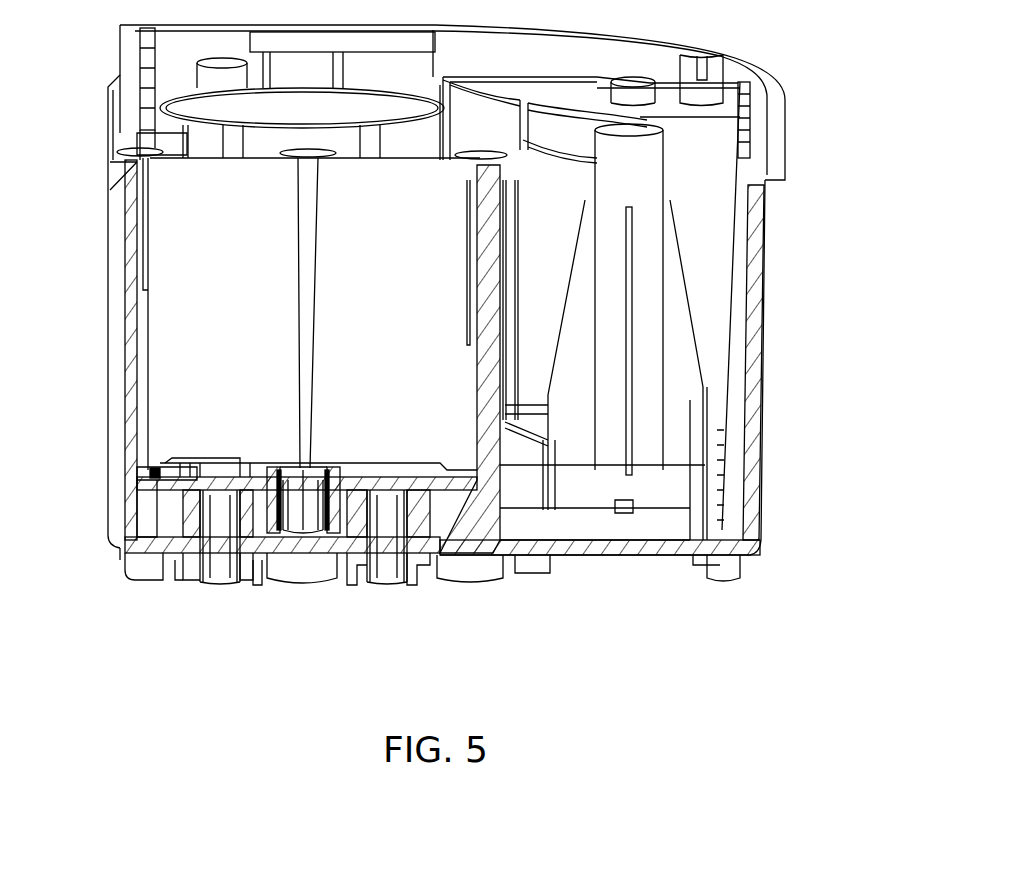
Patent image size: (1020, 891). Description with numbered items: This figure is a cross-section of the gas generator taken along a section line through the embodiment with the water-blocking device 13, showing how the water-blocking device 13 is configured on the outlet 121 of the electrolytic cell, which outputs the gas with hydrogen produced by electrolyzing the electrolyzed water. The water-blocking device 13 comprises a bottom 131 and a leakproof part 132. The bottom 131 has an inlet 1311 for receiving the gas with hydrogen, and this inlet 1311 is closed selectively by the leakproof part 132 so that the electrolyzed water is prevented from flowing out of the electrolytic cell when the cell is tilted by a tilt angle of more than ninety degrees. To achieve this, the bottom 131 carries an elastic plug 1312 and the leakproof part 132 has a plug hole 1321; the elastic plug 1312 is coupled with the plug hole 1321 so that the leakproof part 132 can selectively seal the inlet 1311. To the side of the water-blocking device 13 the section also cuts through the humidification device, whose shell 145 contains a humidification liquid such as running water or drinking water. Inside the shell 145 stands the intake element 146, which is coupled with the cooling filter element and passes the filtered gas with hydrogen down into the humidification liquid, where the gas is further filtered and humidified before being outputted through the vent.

The water-blocking device 13 is at (258, 408).
The plug hole 1321 is at (200, 455).
The leakproof part 132 is at (137, 477).
The bottom 131 is at (140, 548).
The inlet 1311 is at (187, 540).
The elastic plug 1312 is at (337, 497).
The outlet 121 is at (390, 585).
The shell 145 is at (705, 177).
The intake element 146 is at (665, 238).